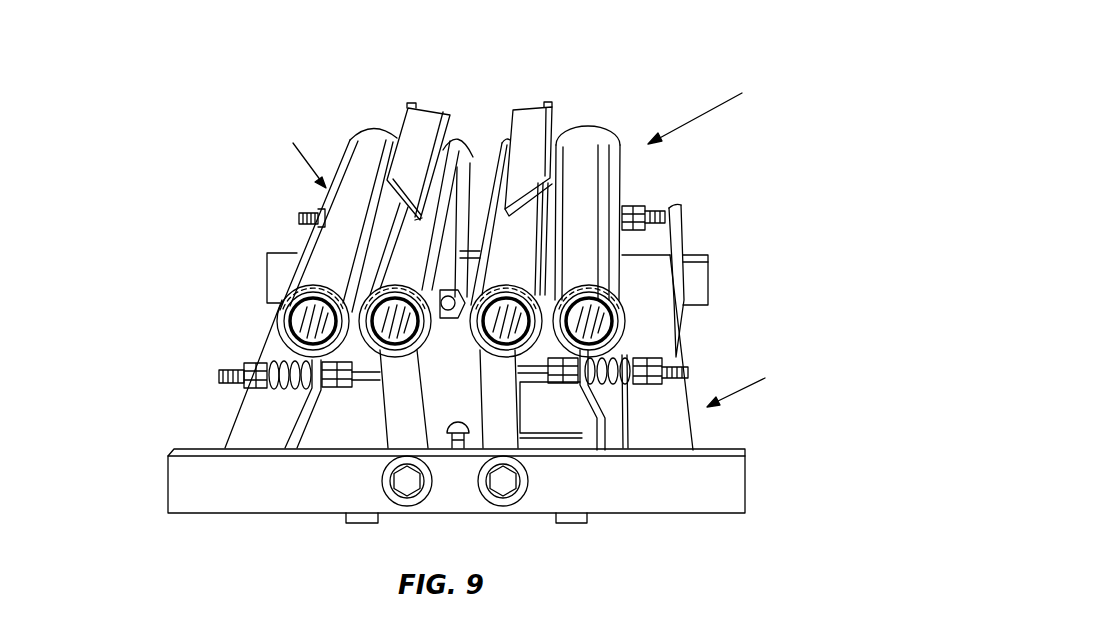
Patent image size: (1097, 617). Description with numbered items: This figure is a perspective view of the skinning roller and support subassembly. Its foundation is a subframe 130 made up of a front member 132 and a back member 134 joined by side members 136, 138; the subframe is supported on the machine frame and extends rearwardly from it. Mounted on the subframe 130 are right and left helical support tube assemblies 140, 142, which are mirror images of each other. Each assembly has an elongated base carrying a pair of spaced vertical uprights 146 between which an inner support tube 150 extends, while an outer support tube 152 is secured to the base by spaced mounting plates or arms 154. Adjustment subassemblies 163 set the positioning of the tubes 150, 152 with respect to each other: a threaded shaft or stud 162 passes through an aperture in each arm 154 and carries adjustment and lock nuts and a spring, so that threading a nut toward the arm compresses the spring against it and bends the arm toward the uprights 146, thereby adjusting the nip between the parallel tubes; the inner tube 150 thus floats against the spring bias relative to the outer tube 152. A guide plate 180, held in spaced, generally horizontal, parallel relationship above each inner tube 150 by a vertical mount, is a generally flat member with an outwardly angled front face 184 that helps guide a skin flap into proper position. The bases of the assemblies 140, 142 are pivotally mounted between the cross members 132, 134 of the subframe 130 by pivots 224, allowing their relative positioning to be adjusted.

The subframe 130 is at (762, 387).
The front member 132 is at (733, 484).
The back member 134 is at (697, 253).
The side member 136 is at (255, 417).
The side member 138 is at (677, 397).
The right helical support tube assembly 140 is at (695, 101).
The left helical support tube assembly 142 is at (294, 152).
The vertical upright 146 is at (492, 390).
The inner support tube 150 is at (330, 245).
The outer support tube 152 is at (459, 195).
The mounting arm 154 is at (600, 420).
The threaded shaft 162 is at (307, 212).
The adjustment subassembly 163 is at (264, 343).
The guide plate 180 is at (433, 118).
The front face 184 is at (528, 203).
The pivot 224 is at (404, 495).